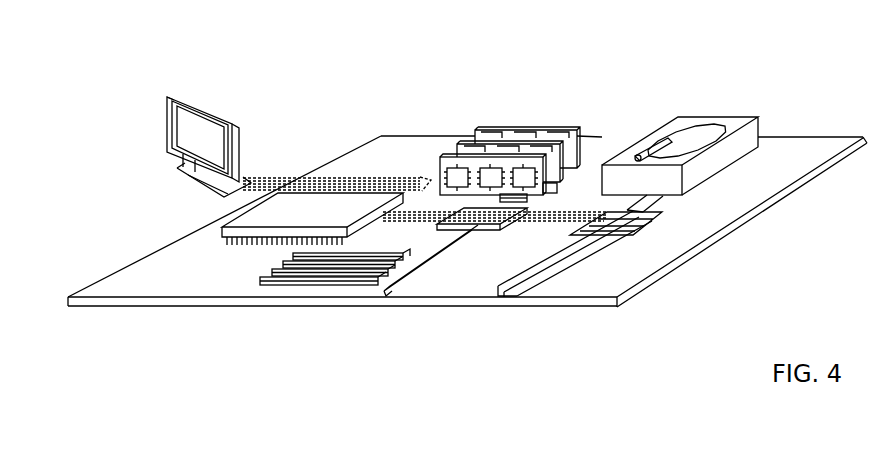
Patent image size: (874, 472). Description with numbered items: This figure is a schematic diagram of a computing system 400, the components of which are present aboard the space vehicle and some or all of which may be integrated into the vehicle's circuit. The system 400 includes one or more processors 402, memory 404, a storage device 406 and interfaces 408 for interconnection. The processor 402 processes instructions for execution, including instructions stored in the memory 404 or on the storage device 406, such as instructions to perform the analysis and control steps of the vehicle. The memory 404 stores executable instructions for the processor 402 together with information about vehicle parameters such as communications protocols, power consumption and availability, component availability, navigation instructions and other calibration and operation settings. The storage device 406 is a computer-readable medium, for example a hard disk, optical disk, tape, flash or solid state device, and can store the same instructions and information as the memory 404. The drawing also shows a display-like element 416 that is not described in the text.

The computing system 400 is at (304, 91).
The processor 402 is at (220, 229).
The memory 404 is at (494, 127).
The storage device 406 is at (678, 122).
The interfaces 408 is at (437, 206).
The display 416 is at (167, 94).